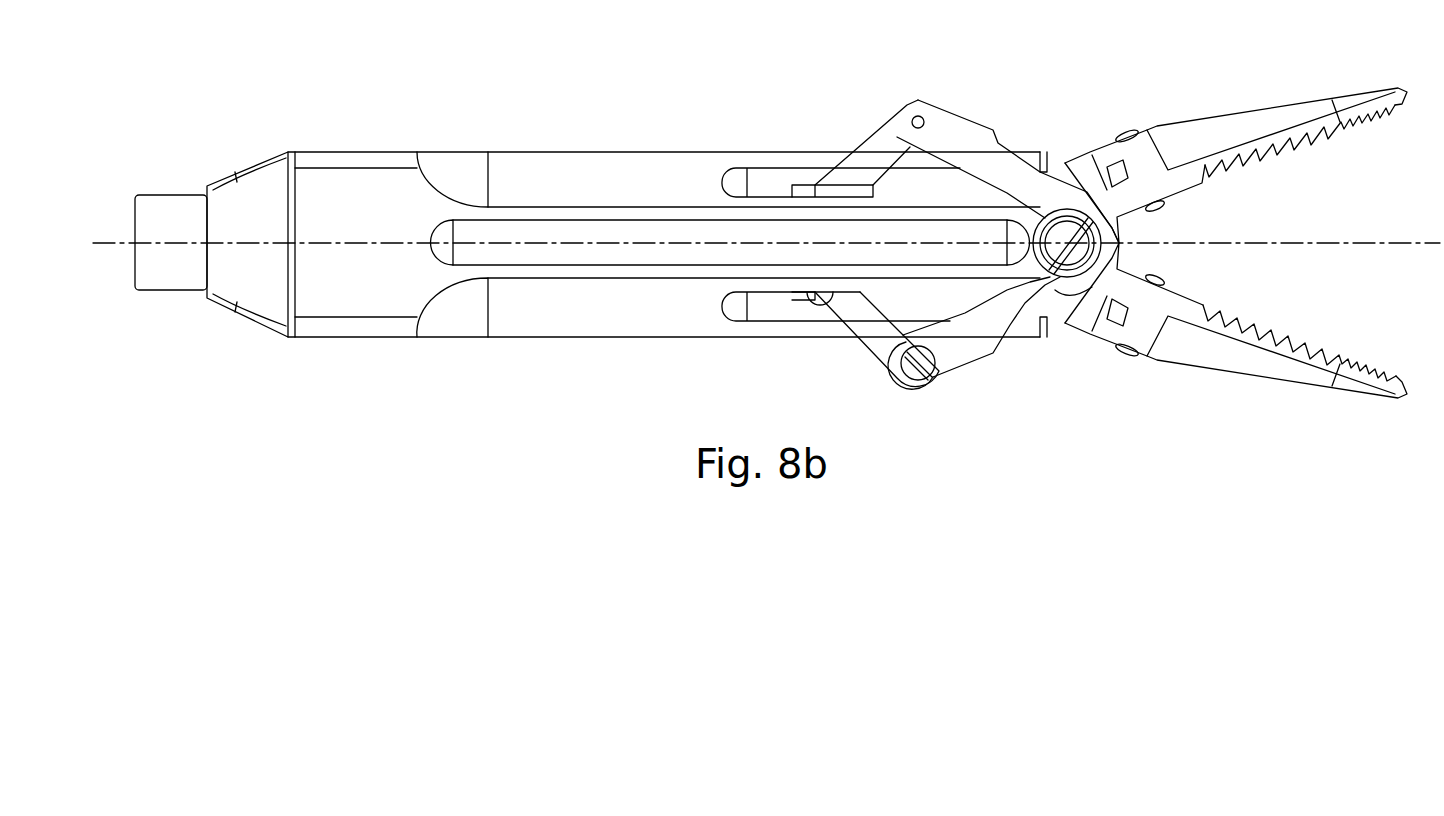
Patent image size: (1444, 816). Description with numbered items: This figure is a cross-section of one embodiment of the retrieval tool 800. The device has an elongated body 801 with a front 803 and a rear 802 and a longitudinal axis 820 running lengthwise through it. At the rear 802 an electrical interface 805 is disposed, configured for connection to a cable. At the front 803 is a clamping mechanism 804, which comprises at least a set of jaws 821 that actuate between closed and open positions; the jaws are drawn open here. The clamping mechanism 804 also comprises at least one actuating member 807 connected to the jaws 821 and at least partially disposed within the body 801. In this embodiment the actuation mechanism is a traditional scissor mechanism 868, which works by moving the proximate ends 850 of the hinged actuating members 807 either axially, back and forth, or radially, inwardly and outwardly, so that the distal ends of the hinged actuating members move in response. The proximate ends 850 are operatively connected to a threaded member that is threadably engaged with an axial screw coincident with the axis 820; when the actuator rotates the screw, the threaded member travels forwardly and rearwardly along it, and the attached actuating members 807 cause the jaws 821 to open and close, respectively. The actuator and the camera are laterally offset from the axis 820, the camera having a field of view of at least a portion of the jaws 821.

The retrieval tool 800 is at (563, 340).
The elongated body 801 is at (412, 148).
The rear 802 is at (252, 170).
The front 803 is at (1022, 150).
The clamping mechanism 804 is at (1128, 133).
The electrical interface 805 is at (163, 291).
The actuating member 807 is at (879, 153).
The longitudinal axis 820 is at (1358, 240).
The jaws 821 is at (1314, 98).
The proximate ends of the actuating members 850 is at (800, 300).
The scissor mechanism 868 is at (848, 330).